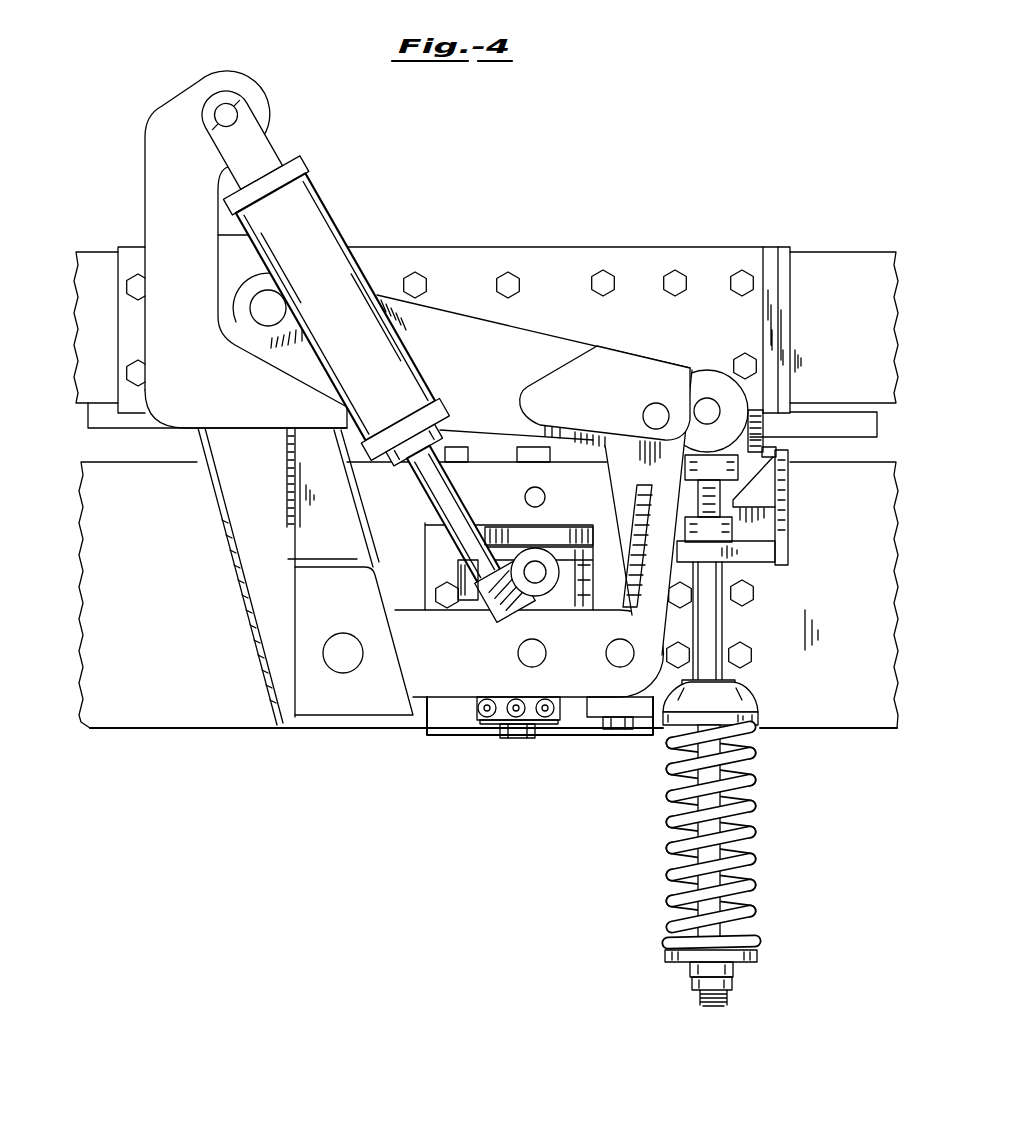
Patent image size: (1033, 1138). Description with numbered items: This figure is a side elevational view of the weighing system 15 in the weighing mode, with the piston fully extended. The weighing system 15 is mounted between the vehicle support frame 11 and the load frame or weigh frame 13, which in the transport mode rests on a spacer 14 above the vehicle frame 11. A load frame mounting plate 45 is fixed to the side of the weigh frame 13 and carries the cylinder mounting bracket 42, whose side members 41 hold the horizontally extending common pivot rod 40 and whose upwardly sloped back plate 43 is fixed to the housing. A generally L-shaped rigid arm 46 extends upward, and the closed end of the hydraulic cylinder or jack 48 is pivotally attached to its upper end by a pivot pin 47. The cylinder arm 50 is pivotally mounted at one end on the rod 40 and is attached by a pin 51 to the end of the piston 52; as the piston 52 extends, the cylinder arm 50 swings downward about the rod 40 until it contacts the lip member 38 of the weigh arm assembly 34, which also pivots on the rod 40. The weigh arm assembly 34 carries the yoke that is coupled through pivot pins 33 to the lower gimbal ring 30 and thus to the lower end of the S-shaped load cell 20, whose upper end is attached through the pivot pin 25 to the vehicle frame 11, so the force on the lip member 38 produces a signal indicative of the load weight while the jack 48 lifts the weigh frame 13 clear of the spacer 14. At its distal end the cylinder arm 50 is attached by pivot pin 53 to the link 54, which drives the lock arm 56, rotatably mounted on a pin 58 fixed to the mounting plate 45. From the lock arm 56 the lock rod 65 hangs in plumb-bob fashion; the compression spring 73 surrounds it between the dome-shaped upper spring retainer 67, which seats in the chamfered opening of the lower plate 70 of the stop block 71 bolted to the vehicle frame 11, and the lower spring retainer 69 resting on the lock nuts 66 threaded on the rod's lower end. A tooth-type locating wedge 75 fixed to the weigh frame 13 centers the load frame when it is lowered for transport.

The vehicle support frame 11 is at (856, 557).
The load frame or weigh frame 13 is at (855, 320).
The spacer 14 is at (849, 430).
The weighing system 15 is at (460, 519).
The load cell 20 is at (522, 540).
The pivot pin 25 is at (545, 494).
The lower gimbal ring 30 is at (458, 573).
The pivot pins 33 is at (547, 585).
The weigh arm assembly 34 is at (540, 758).
The lip member 38 is at (585, 705).
The common pivot pin or rod 40 is at (340, 674).
The side members 41 is at (354, 673).
The cylinder mounting bracket 42 is at (286, 603).
The back plate 43 is at (225, 527).
The load frame mounting plate 45 is at (543, 247).
The L-shaped rigid arm 46 is at (216, 249).
The pivot pin 47 is at (218, 104).
The hydraulic cylinder or jack 48 is at (359, 327).
The cylinder arm 50 is at (529, 699).
The pin 51 is at (518, 668).
The piston 52 is at (470, 507).
The pivot pin 53 is at (608, 663).
The link 54 is at (662, 624).
The lock arm 56 is at (562, 352).
The pin or rod 58 is at (252, 322).
The lock rod 65 is at (722, 644).
The lock nuts 66 is at (737, 972).
The upper spring retainer or collar 67 is at (742, 696).
The lower spring retainer or collar 69 is at (758, 957).
The lower plate 70 is at (752, 566).
The stop block 71 is at (789, 535).
The compression spring 73 is at (755, 810).
The locating wedge 75 is at (763, 427).